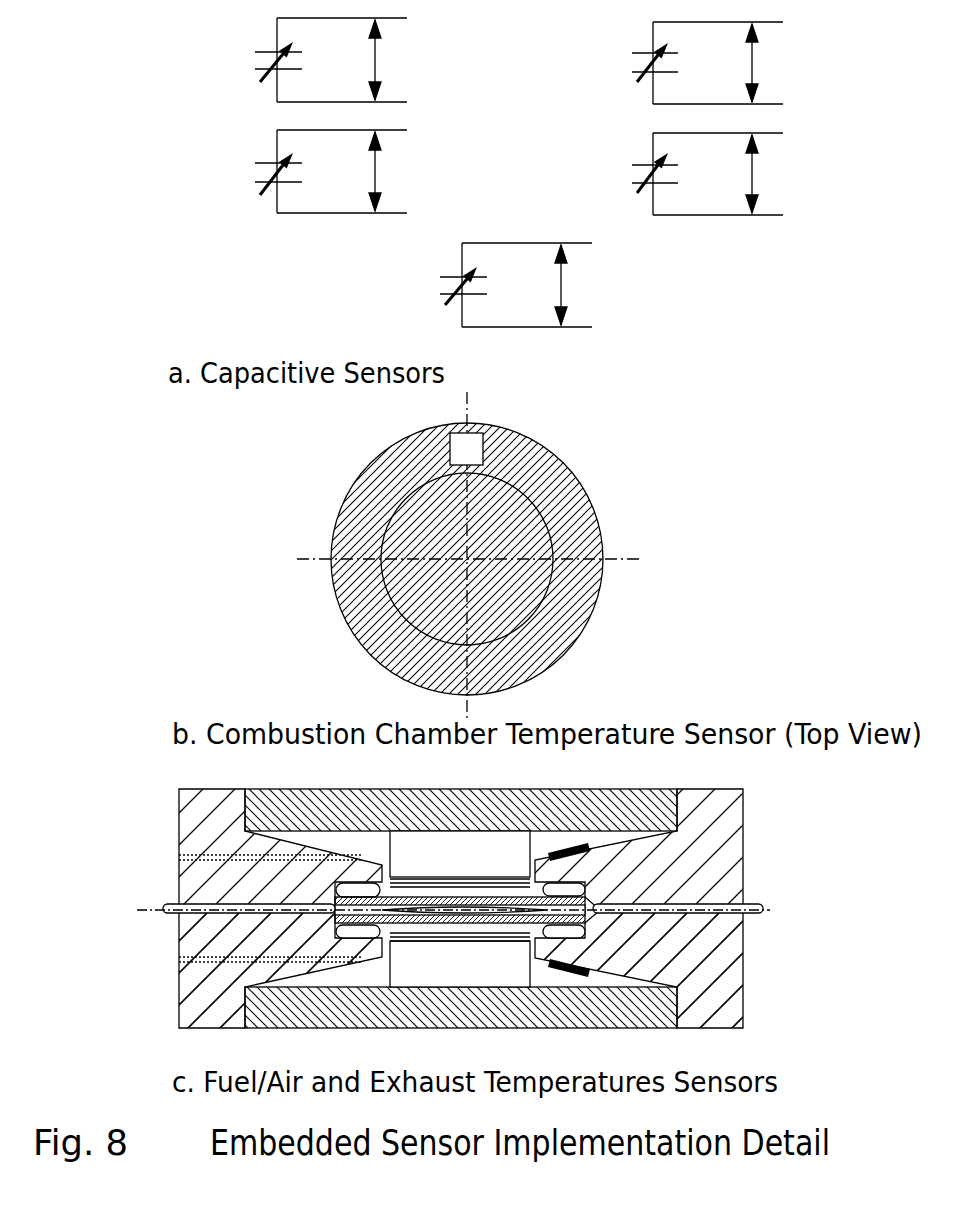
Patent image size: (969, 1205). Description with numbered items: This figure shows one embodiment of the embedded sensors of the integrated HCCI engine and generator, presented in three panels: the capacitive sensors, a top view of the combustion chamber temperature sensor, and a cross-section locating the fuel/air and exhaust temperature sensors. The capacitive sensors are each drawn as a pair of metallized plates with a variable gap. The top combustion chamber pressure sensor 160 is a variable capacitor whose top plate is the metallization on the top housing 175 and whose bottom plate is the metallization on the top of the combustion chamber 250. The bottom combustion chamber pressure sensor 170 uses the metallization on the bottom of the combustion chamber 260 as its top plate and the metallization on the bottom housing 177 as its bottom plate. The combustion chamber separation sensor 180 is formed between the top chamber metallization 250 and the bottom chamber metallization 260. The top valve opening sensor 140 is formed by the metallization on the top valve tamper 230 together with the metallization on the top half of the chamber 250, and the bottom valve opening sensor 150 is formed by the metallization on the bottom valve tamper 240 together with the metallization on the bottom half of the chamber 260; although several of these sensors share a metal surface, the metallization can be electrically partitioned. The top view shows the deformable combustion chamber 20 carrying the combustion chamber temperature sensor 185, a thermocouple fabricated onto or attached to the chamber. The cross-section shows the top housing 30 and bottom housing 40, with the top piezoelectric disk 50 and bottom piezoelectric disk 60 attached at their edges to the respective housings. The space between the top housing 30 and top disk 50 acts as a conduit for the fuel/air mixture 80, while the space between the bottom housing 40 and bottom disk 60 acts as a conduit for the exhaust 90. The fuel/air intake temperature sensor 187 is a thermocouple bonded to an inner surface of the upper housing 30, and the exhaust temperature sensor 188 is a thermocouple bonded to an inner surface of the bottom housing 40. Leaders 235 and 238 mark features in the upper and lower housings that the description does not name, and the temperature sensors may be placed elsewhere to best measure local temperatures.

The deformable combustion chamber 20 is at (335, 903).
The top housing 30 is at (700, 827).
The bottom housing 40 is at (697, 1023).
The top piezoelectric disk 50 is at (590, 803).
The bottom piezoelectric disk 60 is at (595, 1008).
The fuel/air mixture 80 is at (208, 857).
The exhaust 90 is at (208, 955).
The valve opening sensor—top 140 is at (377, 60).
The valve opening sensor—bottom 150 is at (377, 172).
The combustion chamber pressure sensor—top 160 is at (753, 63).
The combustion chamber pressure sensor—bottom 170 is at (753, 173).
The metallization on the top housing 175 is at (638, 52).
The metallization on the bottom housing 177 is at (638, 183).
The combustion chamber separation sensor 180 is at (562, 287).
The combustion chamber temperature sensor 185 is at (467, 450).
The fuel/air intake temperature sensor 187 is at (588, 850).
The exhaust temperature sensor 188 is at (588, 968).
The metallization on the top valve tamper 230 is at (262, 51).
The upper heater element 235 is at (378, 846).
The lower heater element 238 is at (375, 970).
The metallization on the bottom valve tamper 240 is at (262, 180).
The metallization on the top of the combustion chamber 250 is at (262, 68).
The metallization on the bottom of the combustion chamber 260 is at (262, 163).